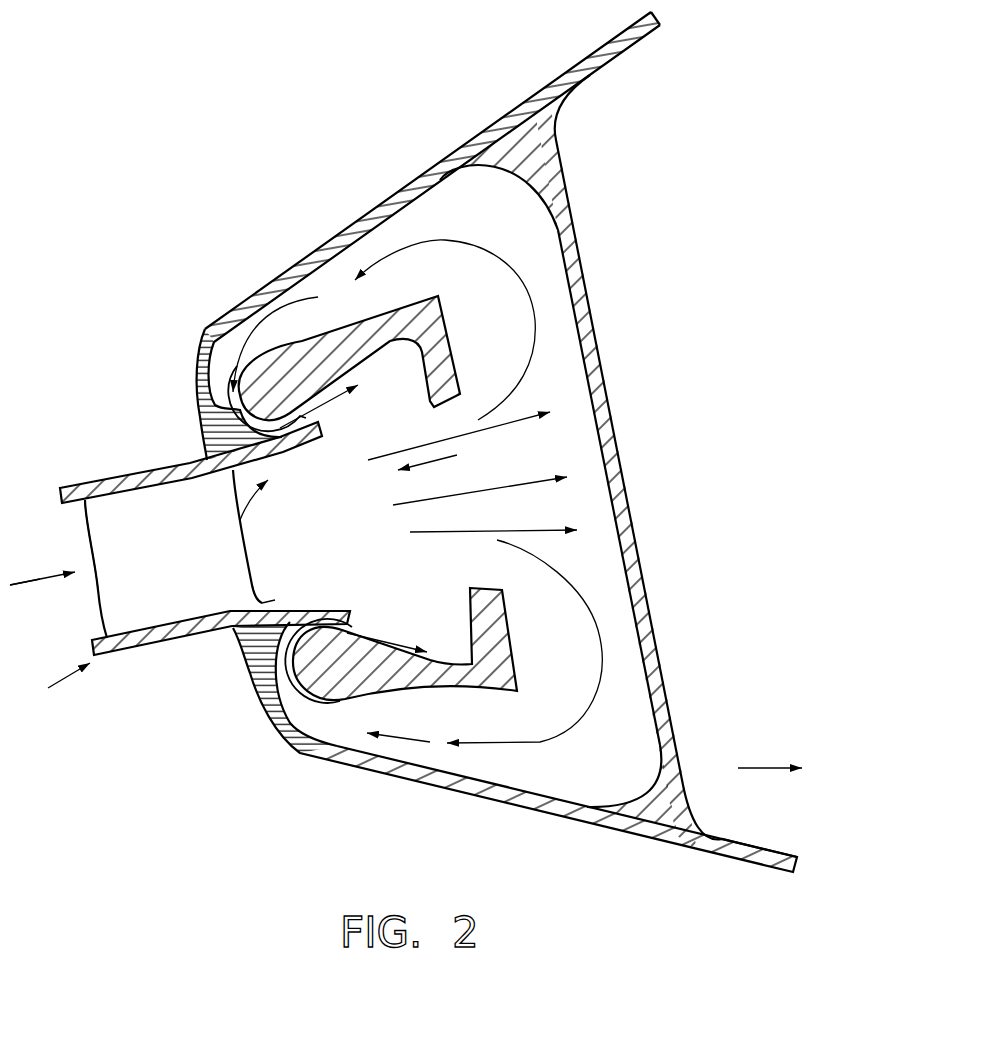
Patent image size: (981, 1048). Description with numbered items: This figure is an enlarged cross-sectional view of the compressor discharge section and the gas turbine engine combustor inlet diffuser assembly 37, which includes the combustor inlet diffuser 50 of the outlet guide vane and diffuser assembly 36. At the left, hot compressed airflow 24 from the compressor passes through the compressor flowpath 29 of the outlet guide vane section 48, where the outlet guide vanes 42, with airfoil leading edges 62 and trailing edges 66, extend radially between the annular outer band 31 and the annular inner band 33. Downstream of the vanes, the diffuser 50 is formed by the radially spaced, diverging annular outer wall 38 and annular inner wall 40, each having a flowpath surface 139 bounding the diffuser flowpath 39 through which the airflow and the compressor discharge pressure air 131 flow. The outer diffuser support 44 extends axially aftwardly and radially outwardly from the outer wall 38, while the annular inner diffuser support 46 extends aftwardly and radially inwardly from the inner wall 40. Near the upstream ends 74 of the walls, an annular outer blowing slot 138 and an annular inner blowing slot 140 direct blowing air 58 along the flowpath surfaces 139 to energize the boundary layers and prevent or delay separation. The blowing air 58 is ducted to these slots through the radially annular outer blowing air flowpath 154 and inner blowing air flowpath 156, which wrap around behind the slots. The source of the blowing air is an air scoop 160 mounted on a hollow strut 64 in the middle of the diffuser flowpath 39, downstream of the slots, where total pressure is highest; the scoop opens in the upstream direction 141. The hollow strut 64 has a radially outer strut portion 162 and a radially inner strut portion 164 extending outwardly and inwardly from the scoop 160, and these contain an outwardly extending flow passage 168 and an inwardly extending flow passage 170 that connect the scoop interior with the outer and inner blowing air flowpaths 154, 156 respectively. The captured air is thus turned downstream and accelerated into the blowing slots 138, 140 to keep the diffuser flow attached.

The hot compressed airflow 24 is at (12, 586).
The compressor flowpath 29 is at (61, 565).
The annular outer band 31 is at (145, 462).
The annular inner band 33 is at (170, 640).
The outlet guide vane and diffuser assembly 36 is at (279, 797).
The gas turbine engine combustor inlet diffuser assembly 37 is at (432, 140).
The annular outer wall 38 is at (290, 477).
The diffuser flowpath 39 is at (349, 530).
The annular inner wall 40 is at (277, 597).
The outlet guide vanes 42 is at (118, 560).
The outer diffuser support 44 is at (613, 35).
The annular inner diffuser support 46 is at (717, 860).
The outlet guide vane section 48 is at (54, 683).
The combustor inlet diffuser 50 is at (240, 520).
The blowing air 58 is at (443, 240).
The leading edges 62 is at (85, 518).
The hollow struts 64 is at (617, 448).
The trailing edges 66 is at (257, 572).
The upstream ends 74 is at (297, 450).
The compressor discharge pressure air 131 is at (485, 432).
The outer blowing slot 138 is at (313, 402).
The flowpath surface 139 is at (338, 617).
The inner blowing slot 140 is at (362, 624).
The upstream direction 141 is at (438, 458).
The outer blowing air flowpath 154 is at (333, 273).
The inner blowing air flowpath 156 is at (290, 710).
The air scoops 160 is at (452, 412).
The outer strut portion 162 is at (570, 287).
The inner strut portion 164 is at (650, 648).
The outwardly extending flow passage 168 is at (547, 300).
The inwardly extending flow passage 170 is at (613, 678).